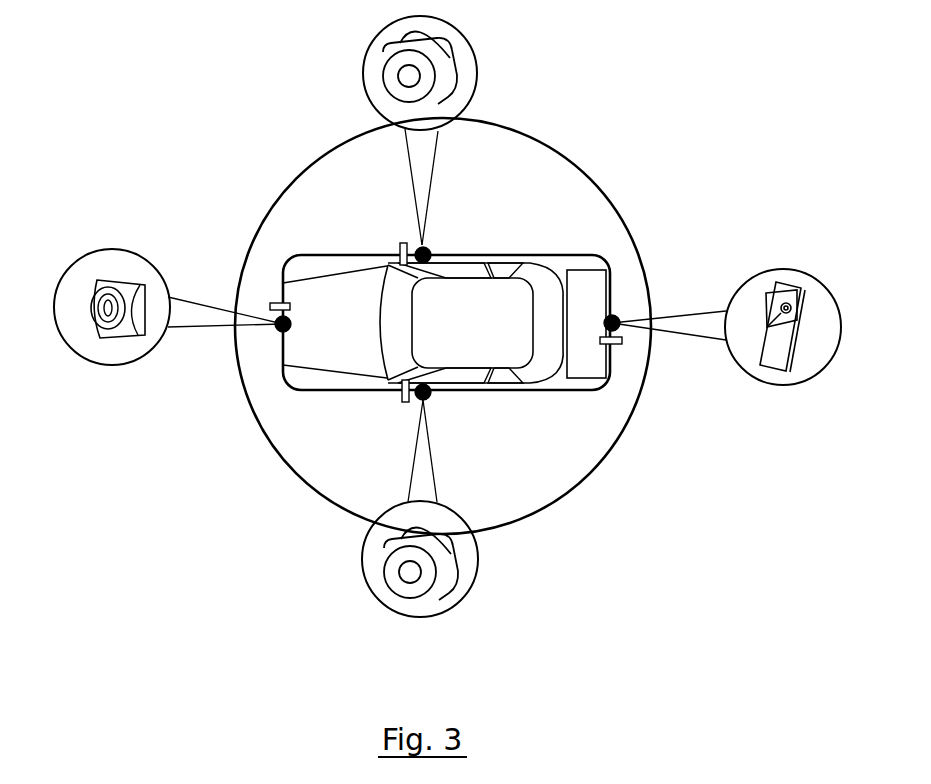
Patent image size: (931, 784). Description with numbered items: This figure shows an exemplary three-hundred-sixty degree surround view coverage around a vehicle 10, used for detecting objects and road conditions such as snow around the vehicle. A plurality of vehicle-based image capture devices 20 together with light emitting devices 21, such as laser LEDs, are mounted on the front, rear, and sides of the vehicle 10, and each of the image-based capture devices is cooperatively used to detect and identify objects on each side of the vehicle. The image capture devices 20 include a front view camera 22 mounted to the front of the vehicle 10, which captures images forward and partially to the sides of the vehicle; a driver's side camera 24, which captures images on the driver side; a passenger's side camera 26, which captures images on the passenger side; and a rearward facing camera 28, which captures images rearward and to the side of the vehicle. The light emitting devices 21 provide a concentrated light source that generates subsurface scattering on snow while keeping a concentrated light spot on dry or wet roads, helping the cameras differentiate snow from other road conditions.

The vehicle 10 is at (548, 256).
The vehicle-based image capture devices 20 is at (356, 90).
The light emitting devices 21 is at (280, 303).
The front view camera 22 is at (110, 249).
The driver's side camera 24 is at (481, 577).
The passenger's side camera 26 is at (478, 70).
The rearward facing camera 28 is at (762, 268).